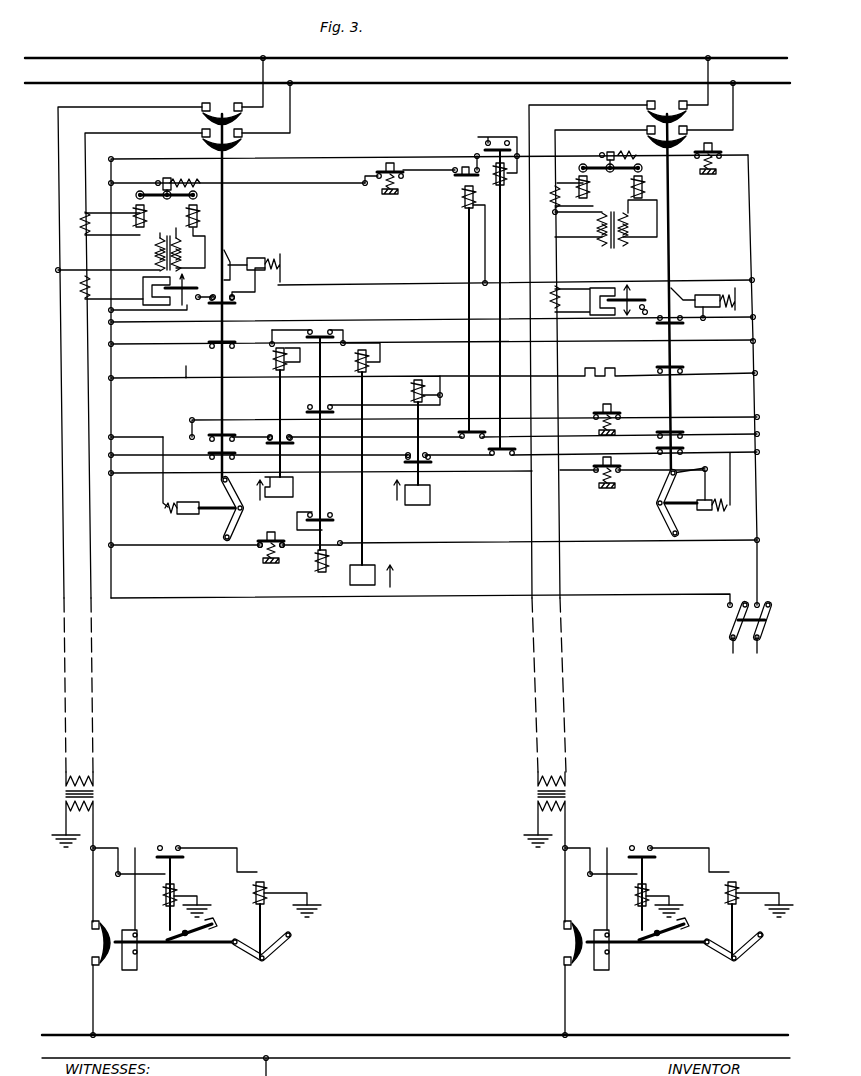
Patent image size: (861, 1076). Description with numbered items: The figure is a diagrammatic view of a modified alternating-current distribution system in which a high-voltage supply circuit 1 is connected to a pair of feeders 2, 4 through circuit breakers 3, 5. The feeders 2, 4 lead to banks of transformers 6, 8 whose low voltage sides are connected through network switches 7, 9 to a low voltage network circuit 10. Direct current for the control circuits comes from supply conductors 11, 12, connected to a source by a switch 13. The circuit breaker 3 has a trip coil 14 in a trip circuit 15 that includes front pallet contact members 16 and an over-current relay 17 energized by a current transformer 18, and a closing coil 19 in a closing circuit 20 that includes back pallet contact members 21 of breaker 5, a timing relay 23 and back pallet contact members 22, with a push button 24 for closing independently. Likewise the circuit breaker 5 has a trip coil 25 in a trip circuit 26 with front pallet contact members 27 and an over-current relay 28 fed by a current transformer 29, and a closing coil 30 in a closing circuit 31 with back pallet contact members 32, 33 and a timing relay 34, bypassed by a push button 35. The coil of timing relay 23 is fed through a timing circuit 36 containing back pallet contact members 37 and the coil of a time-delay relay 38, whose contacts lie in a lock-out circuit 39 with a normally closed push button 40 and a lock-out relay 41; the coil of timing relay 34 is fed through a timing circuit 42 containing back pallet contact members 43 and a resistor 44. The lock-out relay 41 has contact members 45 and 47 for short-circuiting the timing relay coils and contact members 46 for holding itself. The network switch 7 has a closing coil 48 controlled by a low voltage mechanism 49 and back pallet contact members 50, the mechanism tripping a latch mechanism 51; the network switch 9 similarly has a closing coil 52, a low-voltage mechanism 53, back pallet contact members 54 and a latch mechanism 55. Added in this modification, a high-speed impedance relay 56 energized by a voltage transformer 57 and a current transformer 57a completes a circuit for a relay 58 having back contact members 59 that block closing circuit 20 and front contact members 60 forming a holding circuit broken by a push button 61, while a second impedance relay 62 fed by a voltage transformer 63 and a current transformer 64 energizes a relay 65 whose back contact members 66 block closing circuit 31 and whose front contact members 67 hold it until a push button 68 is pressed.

The high-voltage supply circuit 1 is at (501, 80).
The feeder 2 is at (85, 409).
The circuit breaker 3 is at (228, 232).
The feeder 4 is at (552, 604).
The circuit breaker 5 is at (672, 213).
The bank of transformers 6 is at (85, 904).
The network switch 7 is at (200, 946).
The bank of transformers 8 is at (557, 904).
The network switch 9 is at (674, 952).
The low voltage distribution or network circuit 10 is at (413, 1057).
The supply conductor 11 is at (148, 494).
The supply conductor 12 is at (758, 512).
The switch 13 is at (772, 623).
The trip coil 14 is at (272, 261).
The trip circuit 15 is at (370, 286).
The front pallet contact members 16 is at (236, 297).
The over-current relay 17 is at (219, 287).
The current transformer 18 is at (86, 298).
The closing coil 19 is at (176, 516).
The closing circuit 20 is at (410, 433).
The back pallet contact members 21 is at (656, 435).
The back pallet contact members 22 is at (236, 438).
The timing relay 23 is at (278, 404).
The push button 24 is at (604, 411).
The trip coil 25 is at (714, 316).
The trip circuit 26 is at (403, 321).
The front pallet contact members 27 is at (658, 328).
The over-current relay 28 is at (637, 301).
The current transformer 29 is at (556, 292).
The closing coil 30 is at (712, 507).
The closing circuit 31 is at (596, 469).
The back pallet contact members 32 is at (656, 453).
The back pallet contact members 33 is at (236, 456).
The timing relay 34 is at (418, 380).
The push button 35 is at (600, 467).
The timing circuit 36 is at (442, 339).
The back pallet contact members 37 is at (213, 340).
The time-delay relay 38 is at (374, 349).
The lock-out circuit 39 is at (450, 541).
The push button 40 is at (272, 533).
The lock-out relay 41 is at (327, 497).
The timing circuit 42 is at (186, 368).
The back pallet contact members 43 is at (678, 367).
The resistor 44 is at (597, 369).
The contact members 45 is at (336, 333).
The contact members 46 is at (324, 514).
The contact members 47 is at (324, 408).
The closing coil 48 is at (269, 880).
The low voltage mechanism 49 is at (175, 870).
The back pallet contact members 50 is at (138, 934).
The latch mechanism 51 is at (212, 919).
The closing coil 52 is at (721, 903).
The low-voltage mechanism 53 is at (623, 888).
The back pallet contact members 54 is at (600, 909).
The latch mechanism 55 is at (674, 914).
The high-speed impedance relay 56 is at (166, 202).
The voltage transformer 57 is at (155, 262).
The current transformer 57a is at (78, 224).
The relay 58 is at (469, 227).
The back contact members 59 is at (462, 432).
The front contact members 60 is at (455, 173).
The push button 61 is at (375, 172).
The high-speed impedance relay 62 is at (610, 174).
The voltage transformer 63 is at (610, 243).
The current transformer 64 is at (551, 199).
The relay 65 is at (501, 275).
The back contact members 66 is at (513, 450).
The front contact members 67 is at (484, 145).
The push button 68 is at (715, 153).